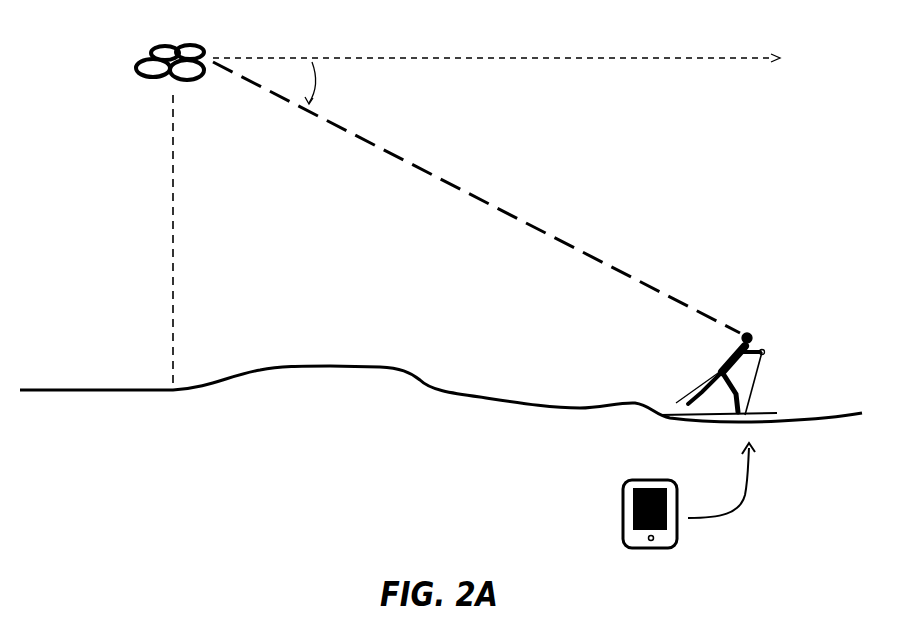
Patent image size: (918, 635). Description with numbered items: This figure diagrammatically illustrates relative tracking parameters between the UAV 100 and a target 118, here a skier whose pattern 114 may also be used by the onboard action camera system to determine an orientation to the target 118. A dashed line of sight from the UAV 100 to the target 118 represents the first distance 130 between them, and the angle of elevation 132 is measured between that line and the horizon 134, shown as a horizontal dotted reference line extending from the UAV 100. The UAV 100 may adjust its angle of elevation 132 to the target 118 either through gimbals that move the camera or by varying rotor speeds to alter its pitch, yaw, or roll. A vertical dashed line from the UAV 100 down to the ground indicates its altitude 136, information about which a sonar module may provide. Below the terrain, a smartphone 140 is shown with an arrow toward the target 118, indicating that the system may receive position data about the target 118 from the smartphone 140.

The UAV 100 is at (128, 65).
The pattern 114 is at (725, 360).
The target 118 is at (757, 352).
The first distance 130 is at (450, 183).
The angle of elevation 132 is at (337, 84).
The horizon 134 is at (612, 53).
The altitude 136 is at (170, 188).
The smartphone 140 is at (623, 517).